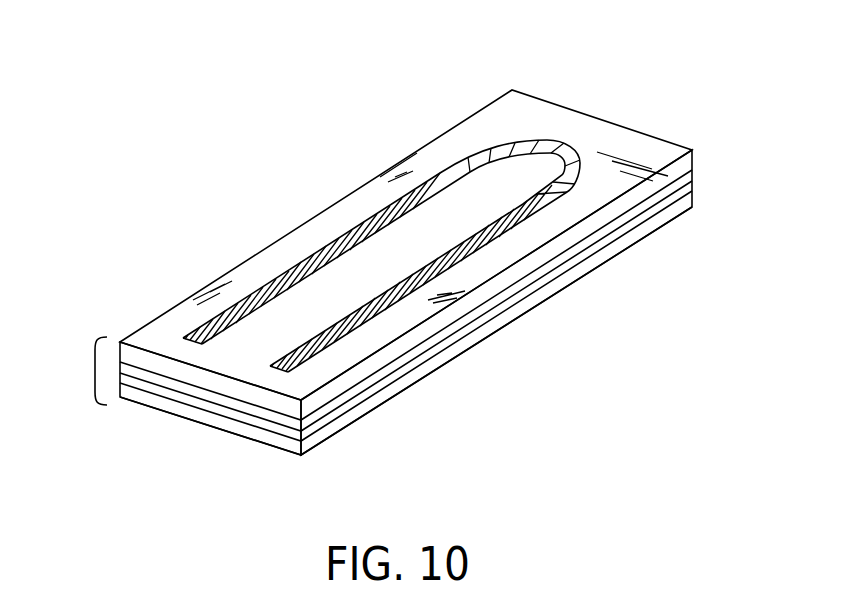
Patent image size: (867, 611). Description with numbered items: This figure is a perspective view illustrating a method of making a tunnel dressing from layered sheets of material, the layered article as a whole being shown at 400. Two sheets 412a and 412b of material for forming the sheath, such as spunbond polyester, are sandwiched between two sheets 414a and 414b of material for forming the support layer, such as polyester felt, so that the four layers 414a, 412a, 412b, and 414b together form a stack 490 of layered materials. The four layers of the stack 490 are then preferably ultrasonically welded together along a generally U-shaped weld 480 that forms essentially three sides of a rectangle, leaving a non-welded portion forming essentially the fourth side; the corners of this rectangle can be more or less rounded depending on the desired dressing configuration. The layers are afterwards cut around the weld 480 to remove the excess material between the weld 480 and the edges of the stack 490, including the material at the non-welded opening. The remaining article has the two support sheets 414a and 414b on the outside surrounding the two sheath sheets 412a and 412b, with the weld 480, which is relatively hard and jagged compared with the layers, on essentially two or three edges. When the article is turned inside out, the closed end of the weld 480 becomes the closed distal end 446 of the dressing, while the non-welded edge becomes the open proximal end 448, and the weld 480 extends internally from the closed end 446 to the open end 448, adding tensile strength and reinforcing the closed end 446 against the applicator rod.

The fluidic device 400 is at (290, 208).
The closed distal end 446 is at (513, 117).
The weld 480 is at (560, 138).
The open proximal end 448 is at (219, 362).
The stack 490 is at (76, 370).
The sheet of support layer material 414a is at (686, 162).
The sheet of sheath material 412a is at (686, 178).
The sheet of sheath material 412b is at (687, 185).
The sheet of support layer material 414b is at (684, 200).